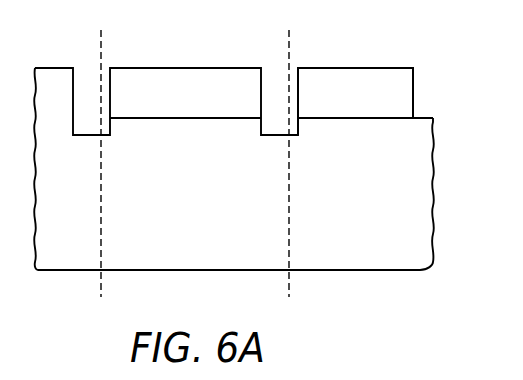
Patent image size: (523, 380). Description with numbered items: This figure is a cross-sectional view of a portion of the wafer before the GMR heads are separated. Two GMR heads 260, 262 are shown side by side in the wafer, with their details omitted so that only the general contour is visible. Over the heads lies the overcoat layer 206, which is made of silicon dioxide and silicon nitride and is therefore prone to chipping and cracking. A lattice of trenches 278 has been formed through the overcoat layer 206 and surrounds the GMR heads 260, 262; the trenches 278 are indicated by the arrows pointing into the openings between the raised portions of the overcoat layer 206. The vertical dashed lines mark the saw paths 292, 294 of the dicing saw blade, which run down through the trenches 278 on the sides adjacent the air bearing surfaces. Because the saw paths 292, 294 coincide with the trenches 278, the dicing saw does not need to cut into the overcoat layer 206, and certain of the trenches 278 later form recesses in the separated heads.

The overcoat layer 206 is at (413, 85).
The GMR head 260 is at (258, 250).
The GMR head 262 is at (378, 250).
The trenches 278 is at (247, 128).
The saw path 292 is at (101, 46).
The saw path 294 is at (289, 46).